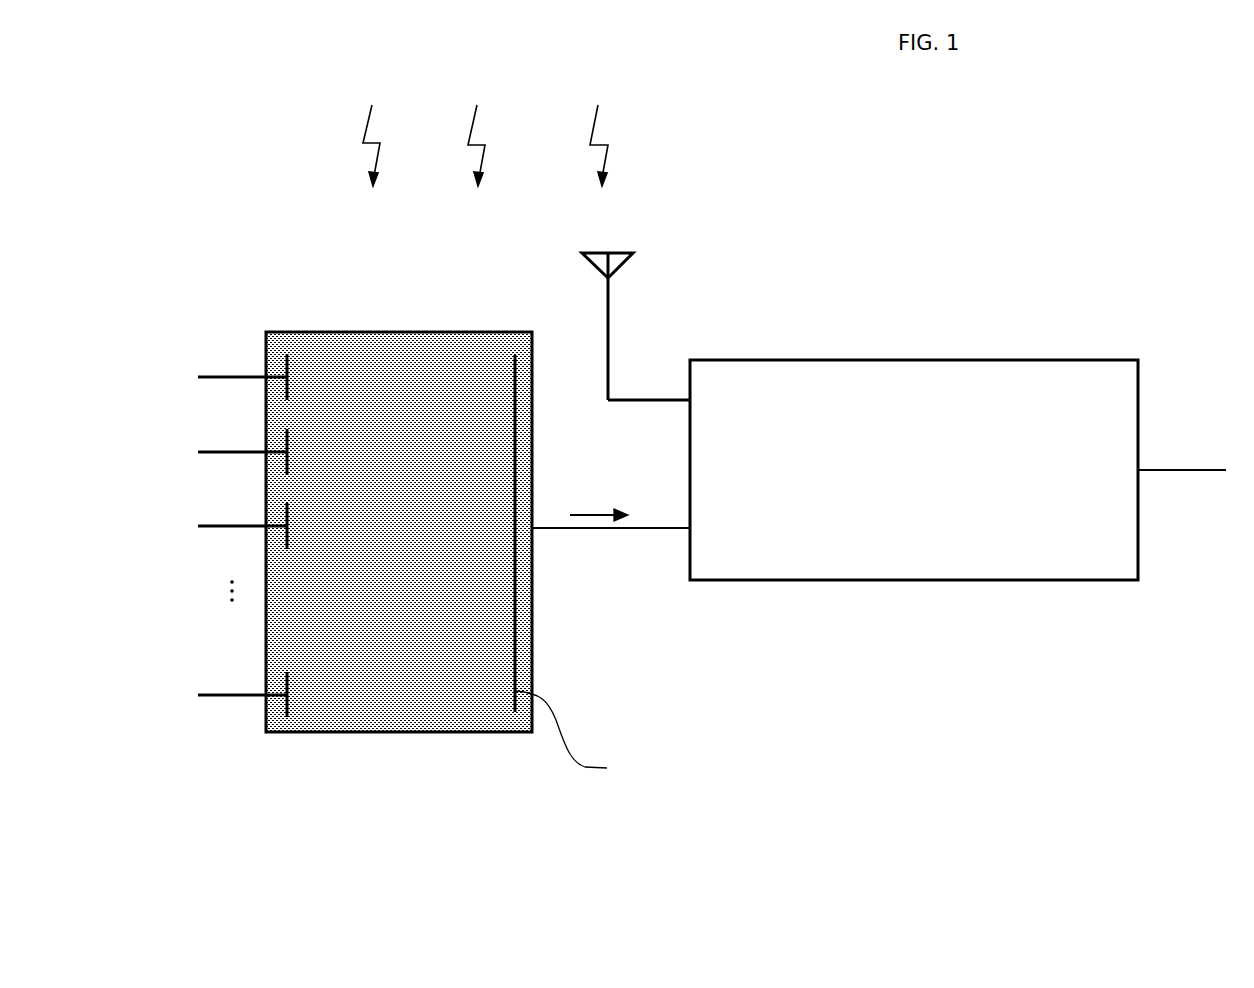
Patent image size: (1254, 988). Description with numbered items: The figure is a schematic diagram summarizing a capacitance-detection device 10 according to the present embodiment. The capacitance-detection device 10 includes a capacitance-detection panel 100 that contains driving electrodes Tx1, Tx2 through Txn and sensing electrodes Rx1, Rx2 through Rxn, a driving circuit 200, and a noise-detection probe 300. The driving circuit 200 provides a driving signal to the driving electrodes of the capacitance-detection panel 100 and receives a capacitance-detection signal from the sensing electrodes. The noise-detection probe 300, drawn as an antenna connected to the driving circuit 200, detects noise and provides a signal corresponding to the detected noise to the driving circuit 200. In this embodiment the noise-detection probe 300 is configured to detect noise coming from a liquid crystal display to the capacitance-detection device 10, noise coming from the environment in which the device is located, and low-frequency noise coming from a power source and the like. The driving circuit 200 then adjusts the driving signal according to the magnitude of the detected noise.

The capacitance-detection device 10 is at (181, 49).
The capacitance-detection panel 100 is at (400, 733).
The driving circuit 200 is at (958, 470).
The noise-detection probe 300 is at (608, 323).